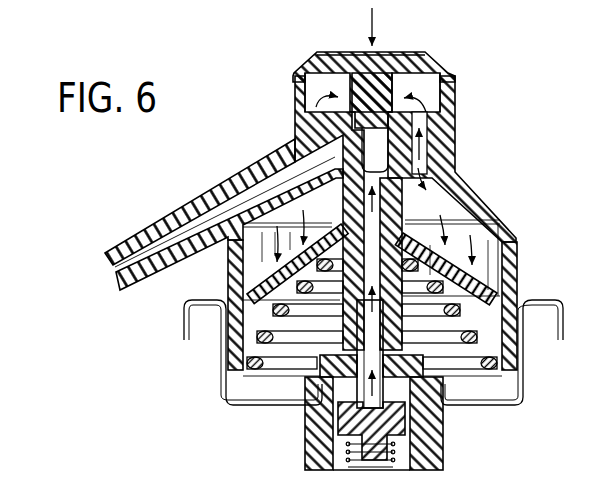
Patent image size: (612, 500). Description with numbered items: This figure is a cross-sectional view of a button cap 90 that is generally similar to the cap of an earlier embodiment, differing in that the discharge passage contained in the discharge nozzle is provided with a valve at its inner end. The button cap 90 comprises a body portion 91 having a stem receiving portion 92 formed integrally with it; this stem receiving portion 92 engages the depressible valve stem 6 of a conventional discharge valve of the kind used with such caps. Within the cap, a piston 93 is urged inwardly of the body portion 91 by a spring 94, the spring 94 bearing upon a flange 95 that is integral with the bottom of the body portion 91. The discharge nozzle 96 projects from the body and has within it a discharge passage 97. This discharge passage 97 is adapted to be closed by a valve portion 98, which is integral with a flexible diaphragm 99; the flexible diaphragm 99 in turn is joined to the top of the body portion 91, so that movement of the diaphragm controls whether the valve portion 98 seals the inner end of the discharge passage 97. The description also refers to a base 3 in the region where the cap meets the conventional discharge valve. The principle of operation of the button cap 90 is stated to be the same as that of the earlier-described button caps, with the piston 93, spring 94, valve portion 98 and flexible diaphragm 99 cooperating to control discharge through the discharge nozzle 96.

The housing base 3 is at (296, 444).
The depressible valve stem 6 is at (393, 427).
The button cap 90 is at (489, 143).
The body portion 91 is at (507, 248).
The stem receiving portion 92 is at (430, 318).
The piston 93 is at (268, 280).
The spring 94 is at (258, 340).
The flange 95 is at (255, 370).
The discharge nozzle 96 is at (222, 182).
The discharge passage 97 is at (157, 242).
The valve portion 98 is at (352, 123).
The flexible diaphragm 99 is at (405, 62).